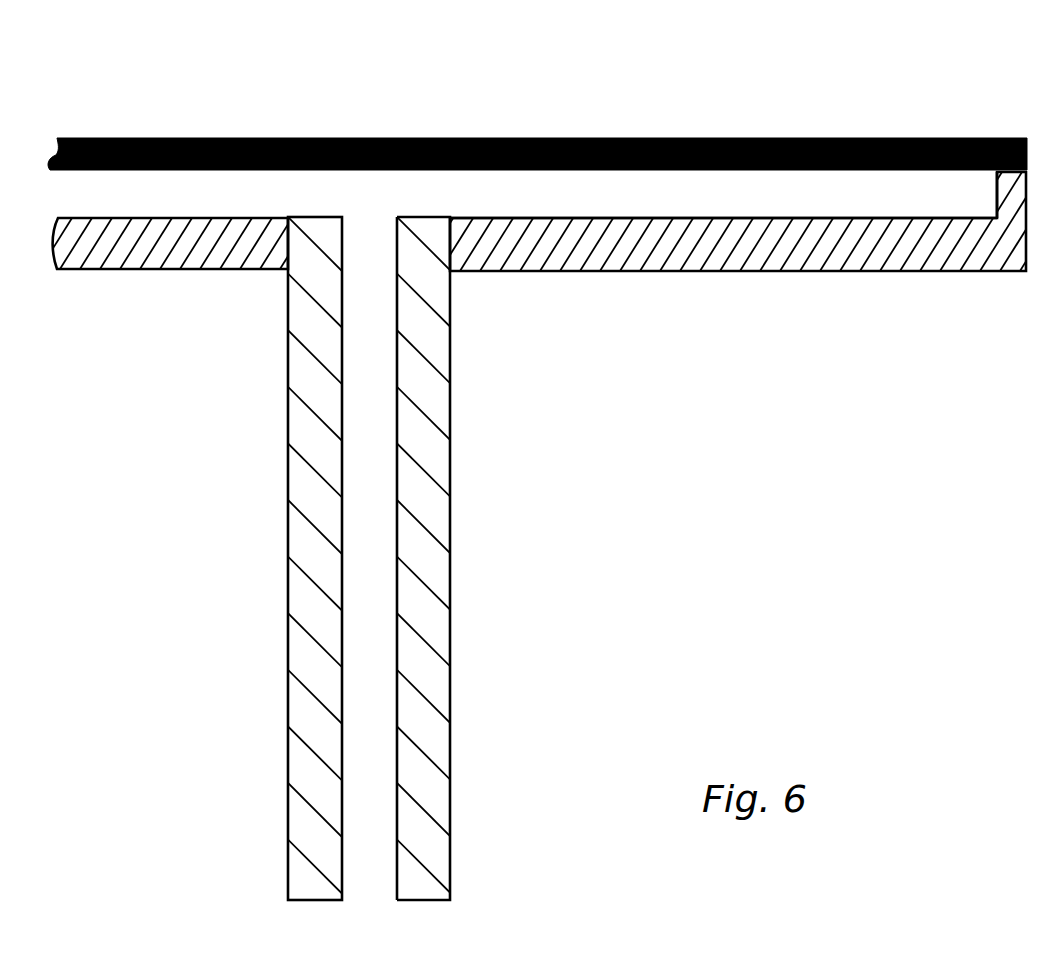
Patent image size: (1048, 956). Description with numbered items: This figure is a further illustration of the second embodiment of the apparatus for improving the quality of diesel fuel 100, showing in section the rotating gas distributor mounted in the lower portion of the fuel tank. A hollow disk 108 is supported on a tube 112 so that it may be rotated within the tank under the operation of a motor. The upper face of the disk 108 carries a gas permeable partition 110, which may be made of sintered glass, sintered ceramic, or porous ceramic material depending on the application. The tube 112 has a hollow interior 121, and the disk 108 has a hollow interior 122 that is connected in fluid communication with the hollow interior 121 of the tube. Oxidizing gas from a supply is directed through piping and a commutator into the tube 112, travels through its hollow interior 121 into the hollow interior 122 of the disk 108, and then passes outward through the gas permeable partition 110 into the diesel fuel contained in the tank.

The method of and apparatus for improving the quality of diesel fuel 100 is at (208, 86).
The gas permeable partition 110 is at (548, 138).
The hollow disk 108 is at (597, 271).
The tube 112 is at (450, 371).
The hollow interior of the tube 121 is at (397, 496).
The hollow interior of the disk 122 is at (823, 218).